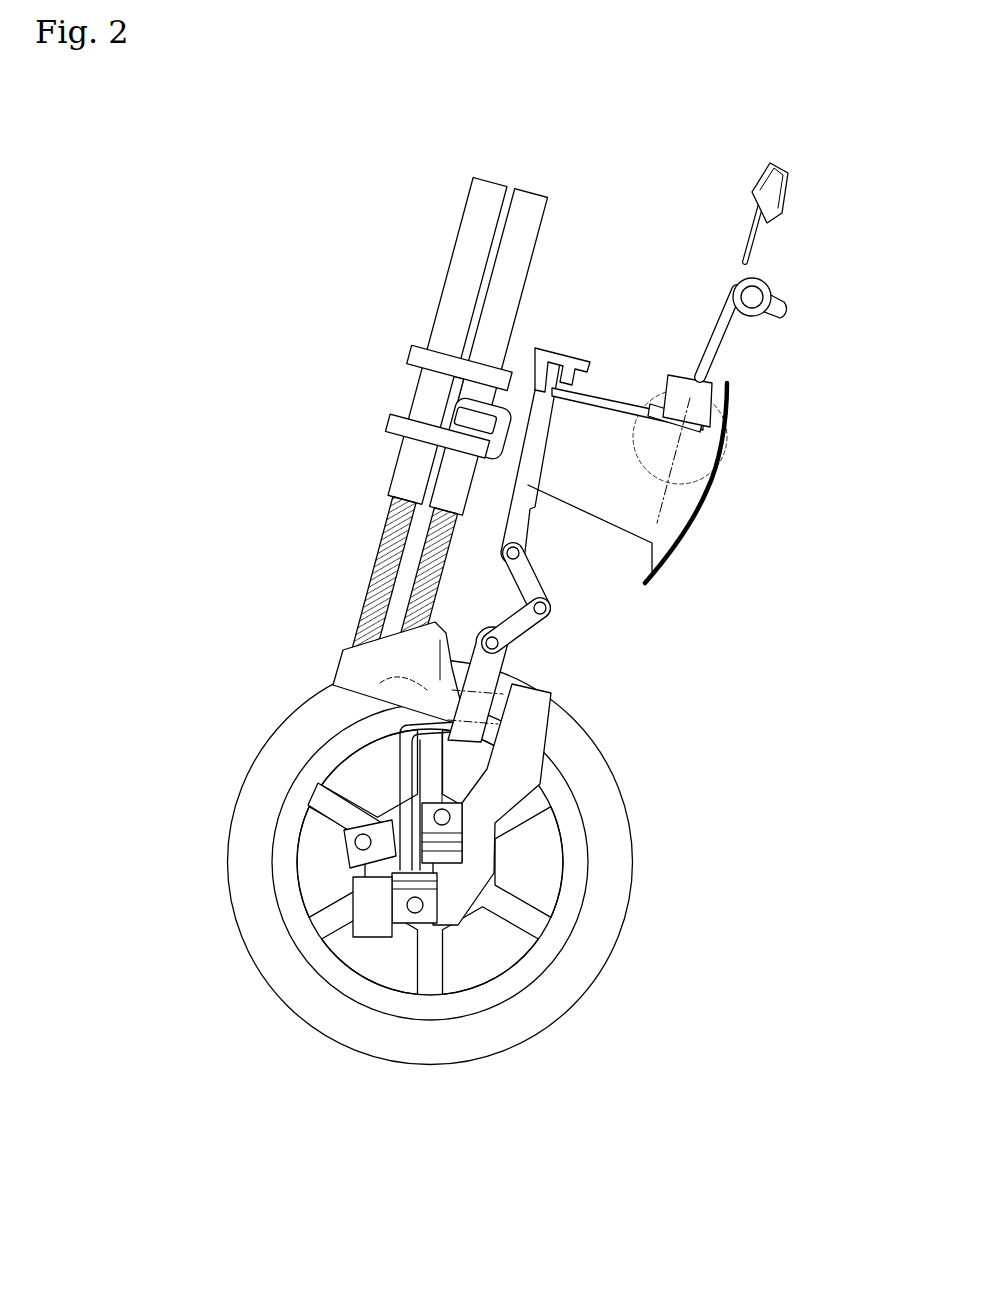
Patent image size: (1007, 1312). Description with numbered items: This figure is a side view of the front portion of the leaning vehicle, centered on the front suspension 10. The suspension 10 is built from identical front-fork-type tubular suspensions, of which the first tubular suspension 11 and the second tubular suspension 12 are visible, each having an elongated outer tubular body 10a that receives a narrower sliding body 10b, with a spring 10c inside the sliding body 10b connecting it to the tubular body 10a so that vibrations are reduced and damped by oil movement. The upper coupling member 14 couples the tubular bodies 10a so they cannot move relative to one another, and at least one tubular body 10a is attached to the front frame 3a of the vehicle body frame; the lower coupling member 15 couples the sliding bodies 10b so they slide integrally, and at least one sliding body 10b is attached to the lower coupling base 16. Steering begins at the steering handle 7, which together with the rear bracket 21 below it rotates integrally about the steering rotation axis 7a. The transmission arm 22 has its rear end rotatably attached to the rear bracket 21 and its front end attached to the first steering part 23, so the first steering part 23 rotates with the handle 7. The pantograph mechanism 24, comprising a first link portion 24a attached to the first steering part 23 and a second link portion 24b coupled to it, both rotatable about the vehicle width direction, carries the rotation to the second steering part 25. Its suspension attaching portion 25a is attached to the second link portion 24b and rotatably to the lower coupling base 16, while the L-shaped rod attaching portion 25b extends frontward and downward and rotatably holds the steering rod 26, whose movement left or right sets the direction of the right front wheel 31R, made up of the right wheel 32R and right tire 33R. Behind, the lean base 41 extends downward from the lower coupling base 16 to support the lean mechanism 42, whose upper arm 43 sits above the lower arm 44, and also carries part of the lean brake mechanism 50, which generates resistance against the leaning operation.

The front frame 3a is at (504, 549).
The steering handle 7 is at (788, 258).
The steering rotation axis 7a is at (665, 504).
The front suspension 10 is at (340, 427).
The tubular body 10a is at (403, 468).
The sliding body 10b is at (388, 522).
The spring 10c is at (370, 563).
The first tubular suspension 11 is at (353, 427).
The second tubular suspension 12 is at (405, 594).
The upper coupling member 14 is at (393, 403).
The lower coupling member 15 is at (343, 670).
The lower coupling base 16 is at (400, 696).
The rear bracket 21 is at (716, 396).
The transmission arm 22 is at (697, 474).
The first steering part 23 is at (578, 348).
The pantograph mechanism 24 is at (667, 611).
The first link portion 24a is at (530, 568).
The second link portion 24b is at (533, 624).
The second steering part 25 is at (263, 820).
The suspension attaching portion 25a is at (410, 778).
The rod attaching portion 25b is at (393, 818).
The steering rod 26 is at (345, 841).
The right front wheel 31R is at (430, 936).
The right wheel 32R is at (495, 1150).
The right tire 33R is at (472, 1050).
The lean base 41 is at (490, 856).
The lean mechanism 42 is at (398, 952).
The upper arm 43 is at (450, 817).
The lower arm 44 is at (414, 918).
The lean brake mechanism 50 is at (368, 932).